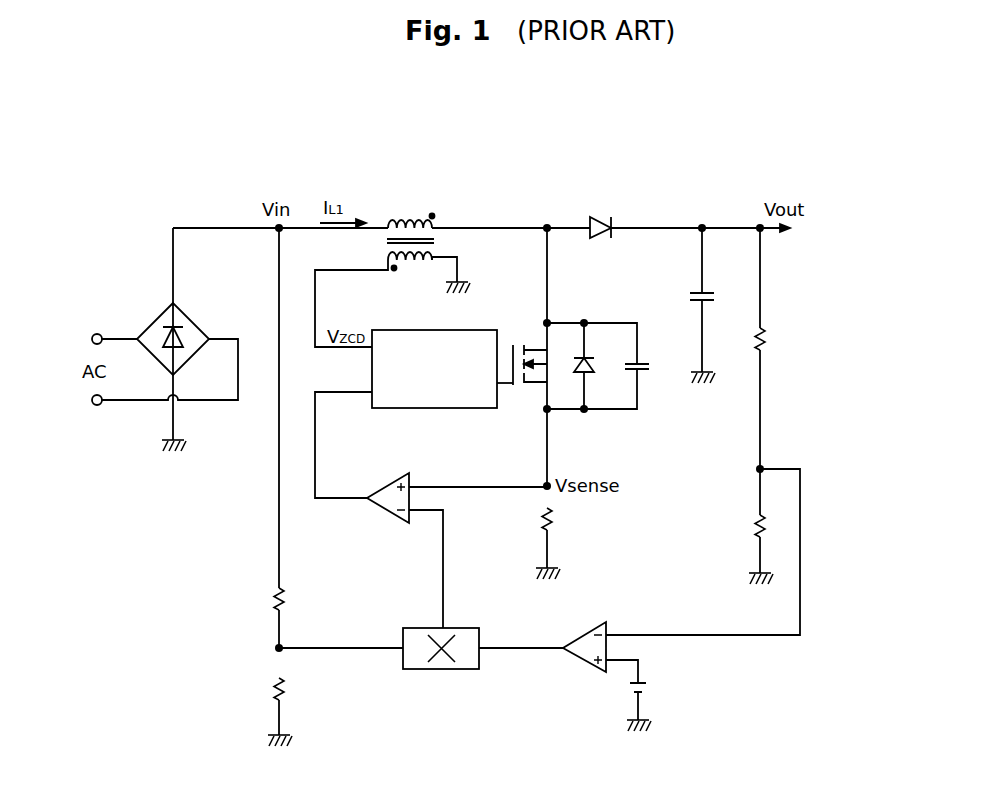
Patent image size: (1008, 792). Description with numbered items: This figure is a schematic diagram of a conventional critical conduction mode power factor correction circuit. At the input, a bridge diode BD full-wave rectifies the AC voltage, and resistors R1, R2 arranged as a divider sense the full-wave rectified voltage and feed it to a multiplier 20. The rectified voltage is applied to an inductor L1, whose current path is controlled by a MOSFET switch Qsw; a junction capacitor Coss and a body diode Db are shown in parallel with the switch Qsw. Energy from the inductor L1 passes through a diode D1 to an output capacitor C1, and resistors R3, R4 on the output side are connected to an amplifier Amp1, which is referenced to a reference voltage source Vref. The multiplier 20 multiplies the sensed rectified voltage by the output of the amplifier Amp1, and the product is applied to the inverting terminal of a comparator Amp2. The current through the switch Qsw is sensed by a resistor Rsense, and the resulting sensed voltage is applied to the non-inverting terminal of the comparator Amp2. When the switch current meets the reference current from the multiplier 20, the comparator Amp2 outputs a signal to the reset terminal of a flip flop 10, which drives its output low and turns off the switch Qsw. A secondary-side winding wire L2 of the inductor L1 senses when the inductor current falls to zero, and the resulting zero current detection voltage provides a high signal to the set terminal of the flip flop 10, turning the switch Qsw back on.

The flip flop 10 is at (418, 330).
The multiplier 20 is at (428, 628).
The bridge diode BD is at (174, 330).
The inductor L1 is at (411, 218).
The secondary-side winding wire L2 is at (410, 269).
The diode D1 is at (602, 214).
The output capacitor C1 is at (717, 295).
The resistor R1 is at (265, 599).
The resistor R2 is at (265, 689).
The resistor R3 is at (776, 339).
The resistor R4 is at (776, 525).
The resistor Rsense is at (581, 519).
The junction capacitor Coss is at (656, 353).
The body diode Db is at (598, 371).
The switch Qsw is at (527, 377).
The amplifier Amp1 is at (586, 672).
The comparator Amp2 is at (390, 521).
The reference voltage Vref is at (659, 687).